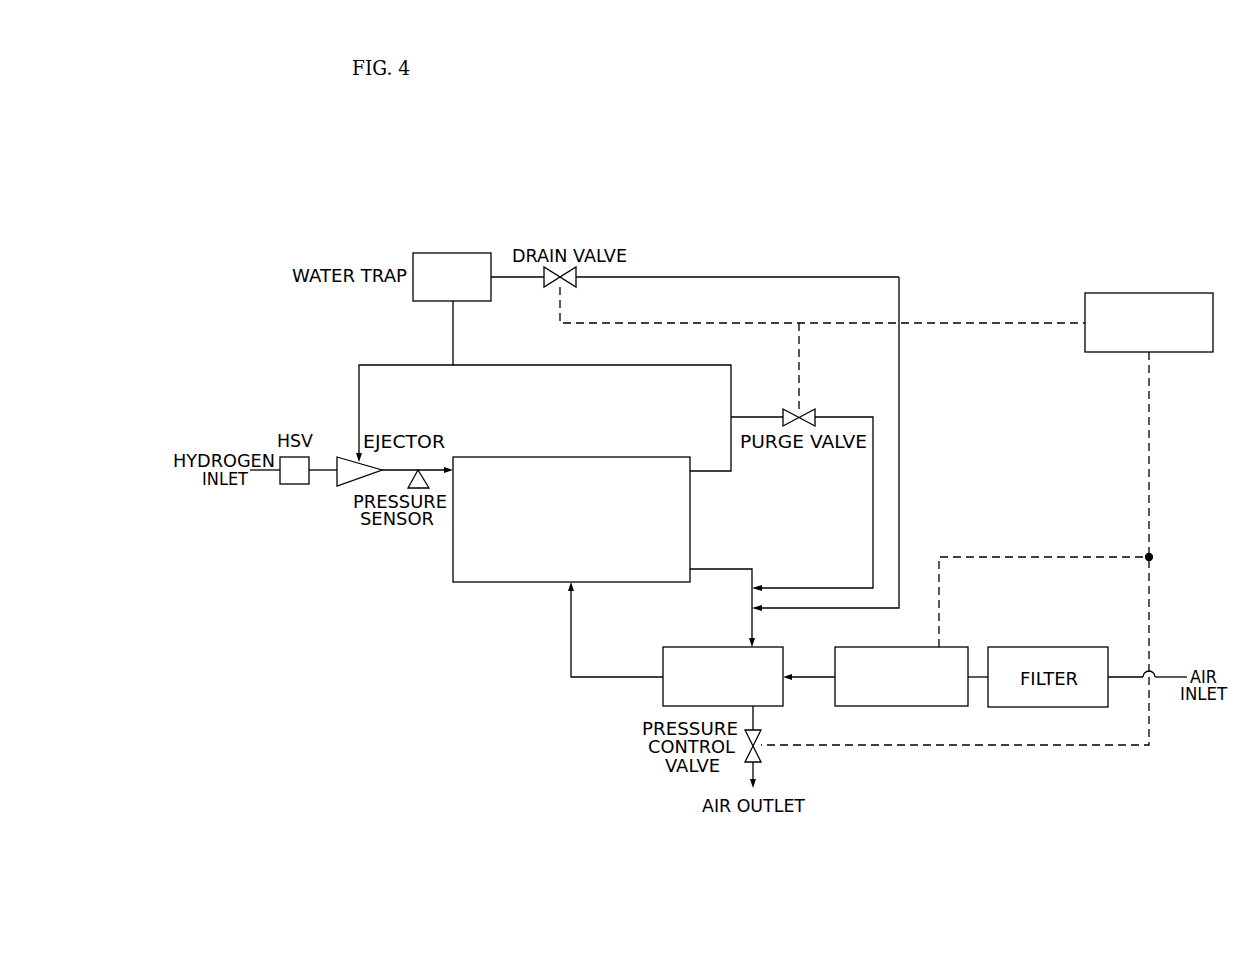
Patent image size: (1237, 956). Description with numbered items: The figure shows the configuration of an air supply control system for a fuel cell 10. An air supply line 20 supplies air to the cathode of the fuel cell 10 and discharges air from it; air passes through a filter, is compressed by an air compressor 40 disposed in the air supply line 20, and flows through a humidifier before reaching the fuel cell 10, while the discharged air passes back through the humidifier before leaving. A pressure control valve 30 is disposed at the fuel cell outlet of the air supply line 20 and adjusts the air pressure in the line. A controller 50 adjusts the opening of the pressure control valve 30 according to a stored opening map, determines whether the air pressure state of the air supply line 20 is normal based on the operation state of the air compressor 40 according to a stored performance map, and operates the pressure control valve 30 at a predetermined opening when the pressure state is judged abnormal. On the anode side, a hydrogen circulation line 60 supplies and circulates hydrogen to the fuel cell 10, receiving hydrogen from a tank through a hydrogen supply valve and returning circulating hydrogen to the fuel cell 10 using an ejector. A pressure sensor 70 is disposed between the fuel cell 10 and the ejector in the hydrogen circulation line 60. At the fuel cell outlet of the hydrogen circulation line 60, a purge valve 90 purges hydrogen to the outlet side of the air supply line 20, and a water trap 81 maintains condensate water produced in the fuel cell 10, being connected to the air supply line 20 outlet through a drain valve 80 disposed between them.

The fuel cell 10 is at (690, 518).
The air supply line 20 is at (554, 668).
The pressure control valve 30 is at (761, 757).
The air compressor 40 is at (962, 647).
The controller 50 is at (1150, 293).
The hydrogen circulation line 60 is at (343, 371).
The pressure sensor 70 is at (420, 470).
The drain valve 80 is at (566, 285).
The water trap 81 is at (452, 253).
The purge valve 90 is at (805, 410).